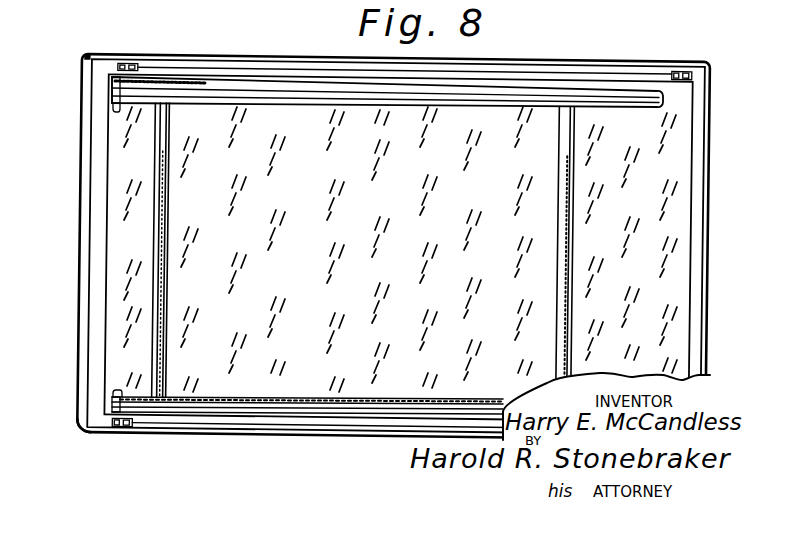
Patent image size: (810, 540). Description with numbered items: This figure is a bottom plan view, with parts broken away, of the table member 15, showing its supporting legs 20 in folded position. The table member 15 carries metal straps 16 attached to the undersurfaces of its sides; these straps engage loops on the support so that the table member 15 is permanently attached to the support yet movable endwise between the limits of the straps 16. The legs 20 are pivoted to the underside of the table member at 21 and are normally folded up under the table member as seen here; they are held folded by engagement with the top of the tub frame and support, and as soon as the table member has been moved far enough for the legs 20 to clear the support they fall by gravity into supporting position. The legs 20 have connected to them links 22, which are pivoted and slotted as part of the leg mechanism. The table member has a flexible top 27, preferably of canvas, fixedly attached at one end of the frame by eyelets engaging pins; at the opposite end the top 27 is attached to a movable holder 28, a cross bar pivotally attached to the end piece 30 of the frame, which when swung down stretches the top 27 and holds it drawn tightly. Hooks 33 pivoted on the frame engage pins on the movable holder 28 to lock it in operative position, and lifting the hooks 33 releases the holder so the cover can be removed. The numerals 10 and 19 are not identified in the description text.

The window sash 10 is at (120, 247).
The table member 15 is at (699, 83).
The metal straps 16 is at (637, 74).
The mullion bars 19 is at (560, 128).
The legs 20 is at (369, 97).
The pivot of legs 21 is at (122, 106).
The links 22 is at (176, 80).
The flexible top 27 is at (660, 131).
The movable holder 28 is at (86, 82).
The end piece 30 is at (100, 132).
The hooks 33 is at (100, 432).